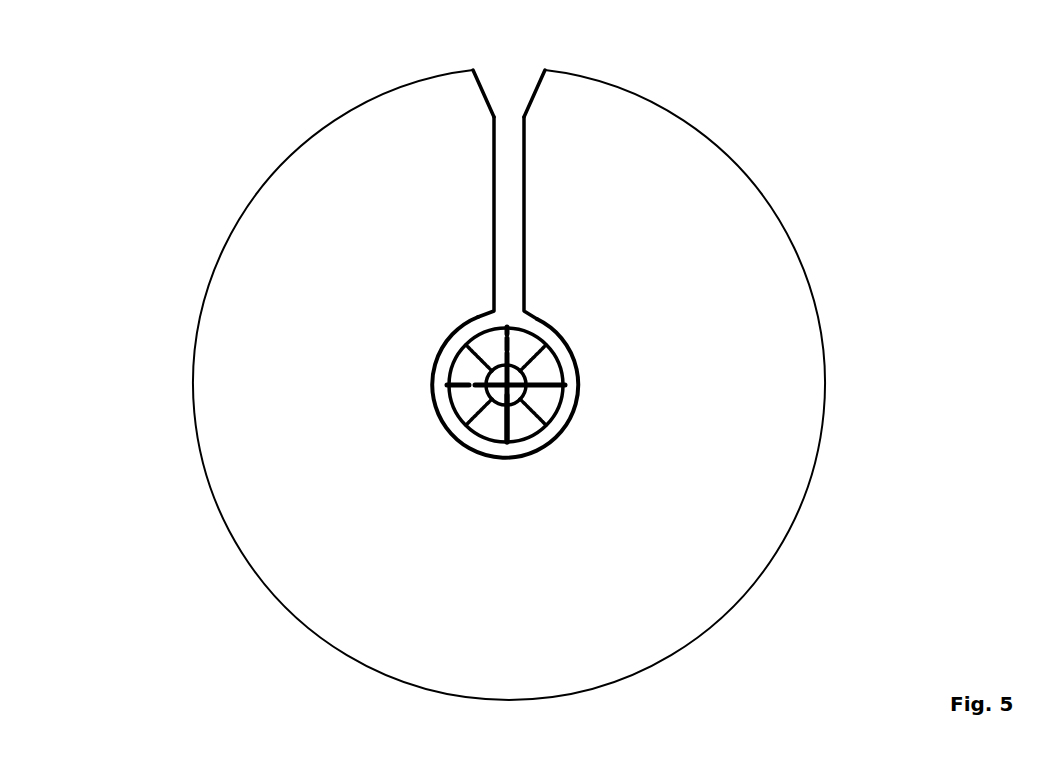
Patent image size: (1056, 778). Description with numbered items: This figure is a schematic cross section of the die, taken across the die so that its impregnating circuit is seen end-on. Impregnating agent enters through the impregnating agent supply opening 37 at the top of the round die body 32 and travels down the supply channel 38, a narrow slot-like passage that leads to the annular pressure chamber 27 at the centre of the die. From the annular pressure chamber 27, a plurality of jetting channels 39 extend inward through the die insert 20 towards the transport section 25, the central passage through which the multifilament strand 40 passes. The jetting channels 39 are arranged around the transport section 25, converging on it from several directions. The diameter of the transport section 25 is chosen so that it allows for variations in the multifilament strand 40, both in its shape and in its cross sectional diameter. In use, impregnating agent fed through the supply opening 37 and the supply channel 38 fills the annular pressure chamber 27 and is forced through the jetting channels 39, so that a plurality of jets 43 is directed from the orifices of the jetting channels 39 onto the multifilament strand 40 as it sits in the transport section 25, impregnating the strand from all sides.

The die insert 20 is at (452, 362).
The transport section 25 is at (488, 393).
The annular pressure chamber 27 is at (458, 342).
The disc 32 is at (730, 158).
The impregnating agent supply opening 37 is at (503, 93).
The supply channel 38 is at (508, 208).
The jetting channels 39 is at (482, 347).
The multifilament strand 40 is at (508, 400).
The jets 43 is at (533, 370).